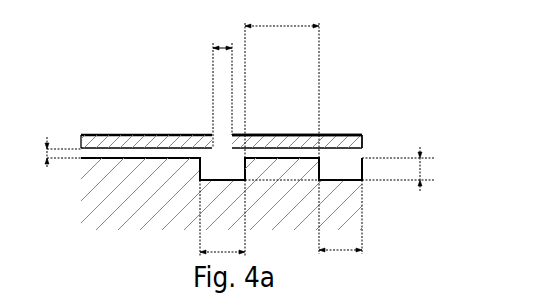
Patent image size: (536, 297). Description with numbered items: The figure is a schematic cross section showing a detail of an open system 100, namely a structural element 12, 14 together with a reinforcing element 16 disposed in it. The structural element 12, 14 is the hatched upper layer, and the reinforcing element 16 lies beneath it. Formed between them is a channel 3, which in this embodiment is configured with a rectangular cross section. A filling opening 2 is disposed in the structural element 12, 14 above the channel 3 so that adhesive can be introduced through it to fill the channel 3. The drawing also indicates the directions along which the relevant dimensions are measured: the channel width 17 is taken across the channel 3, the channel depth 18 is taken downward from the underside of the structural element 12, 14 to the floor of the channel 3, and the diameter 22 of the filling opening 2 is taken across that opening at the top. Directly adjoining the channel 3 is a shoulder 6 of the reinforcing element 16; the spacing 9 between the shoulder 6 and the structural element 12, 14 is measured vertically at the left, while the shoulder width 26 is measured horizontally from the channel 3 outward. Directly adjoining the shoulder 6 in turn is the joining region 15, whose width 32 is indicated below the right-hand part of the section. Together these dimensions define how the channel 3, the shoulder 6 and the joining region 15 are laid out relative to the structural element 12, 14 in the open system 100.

The open system 100 is at (126, 58).
The filling opening 2 is at (215, 162).
The channel 3 is at (215, 157).
The shoulder 6 is at (262, 138).
The spacing 9 is at (56, 152).
The structural element 12 is at (333, 138).
The structural element 14 is at (222, 141).
The joining region 15 is at (362, 148).
The reinforcing element 16 is at (349, 191).
The channel width 17 is at (222, 218).
The channel depth 18 is at (345, 169).
The filling opening diameter 22 is at (223, 37).
The shoulder width 26 is at (282, 84).
The width of joining region 32 is at (340, 217).